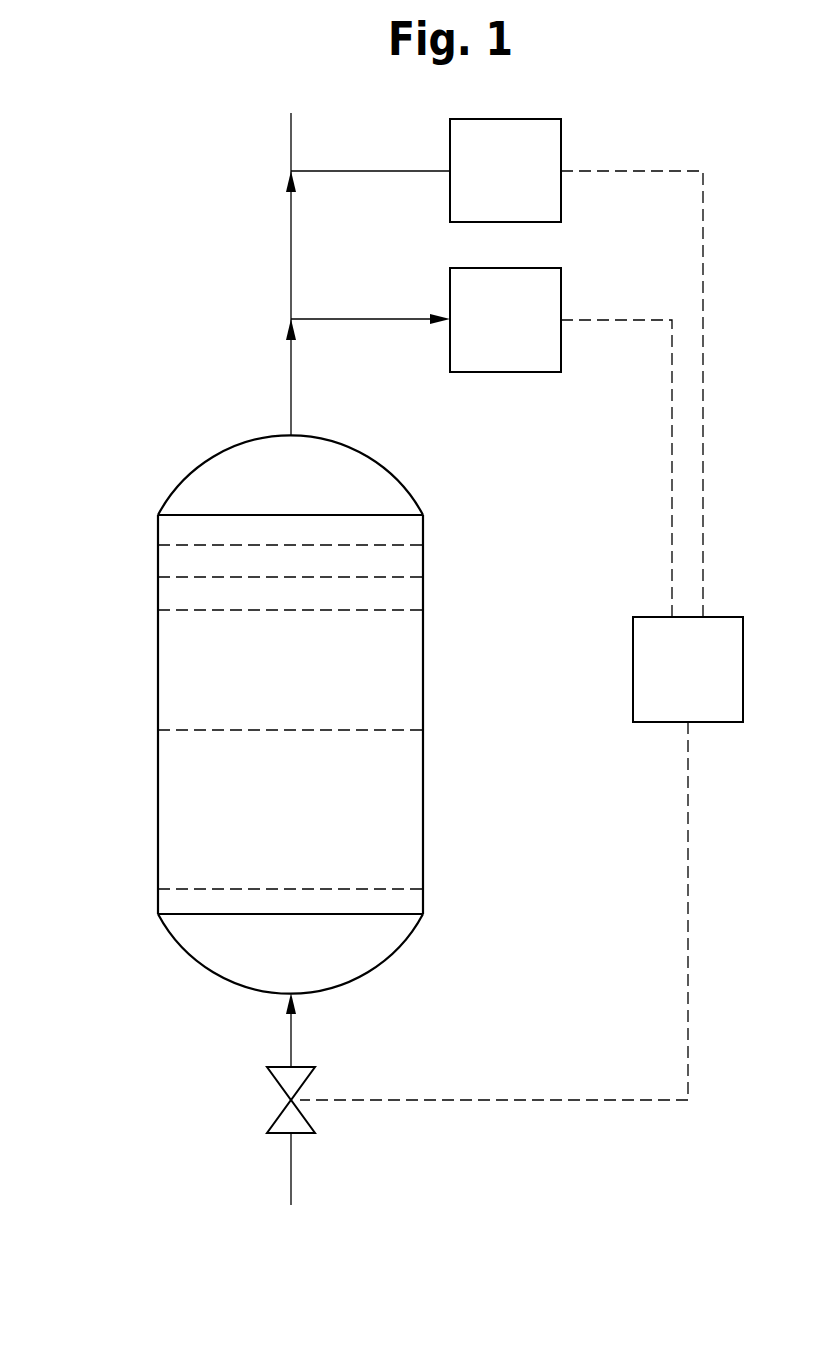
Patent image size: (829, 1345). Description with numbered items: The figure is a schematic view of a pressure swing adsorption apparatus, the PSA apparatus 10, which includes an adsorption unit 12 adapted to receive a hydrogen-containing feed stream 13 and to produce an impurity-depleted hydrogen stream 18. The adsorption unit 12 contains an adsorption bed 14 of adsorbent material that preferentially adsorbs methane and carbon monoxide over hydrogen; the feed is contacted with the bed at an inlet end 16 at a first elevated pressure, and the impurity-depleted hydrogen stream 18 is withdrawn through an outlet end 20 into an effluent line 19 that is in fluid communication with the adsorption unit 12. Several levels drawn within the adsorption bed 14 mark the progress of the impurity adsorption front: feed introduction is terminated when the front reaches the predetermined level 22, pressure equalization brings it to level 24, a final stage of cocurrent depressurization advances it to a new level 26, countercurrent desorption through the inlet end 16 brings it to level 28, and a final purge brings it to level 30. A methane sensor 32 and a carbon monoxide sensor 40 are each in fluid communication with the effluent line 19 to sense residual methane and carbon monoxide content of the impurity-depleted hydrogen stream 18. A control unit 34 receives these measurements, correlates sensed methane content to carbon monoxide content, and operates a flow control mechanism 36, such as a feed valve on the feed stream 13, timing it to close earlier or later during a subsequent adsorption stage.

The PSA apparatus 10 is at (105, 423).
The adsorption unit 12 is at (130, 714).
The hydrogen-containing feed stream 13 is at (291, 1038).
The adsorption bed 14 is at (303, 684).
The inlet end 16 is at (297, 994).
The impurity-depleted hydrogen stream 18 is at (291, 380).
The effluent line 19 is at (265, 312).
The outlet end 20 is at (293, 435).
The predetermined level 22 is at (398, 610).
The level 24 is at (398, 577).
The new level 26 is at (398, 545).
The level 28 is at (398, 730).
The level 30 is at (398, 889).
The methane sensor 32 is at (518, 332).
The control unit 34 is at (701, 677).
The flow control mechanism 36 is at (279, 1121).
The carbon monoxide sensor 40 is at (518, 182).